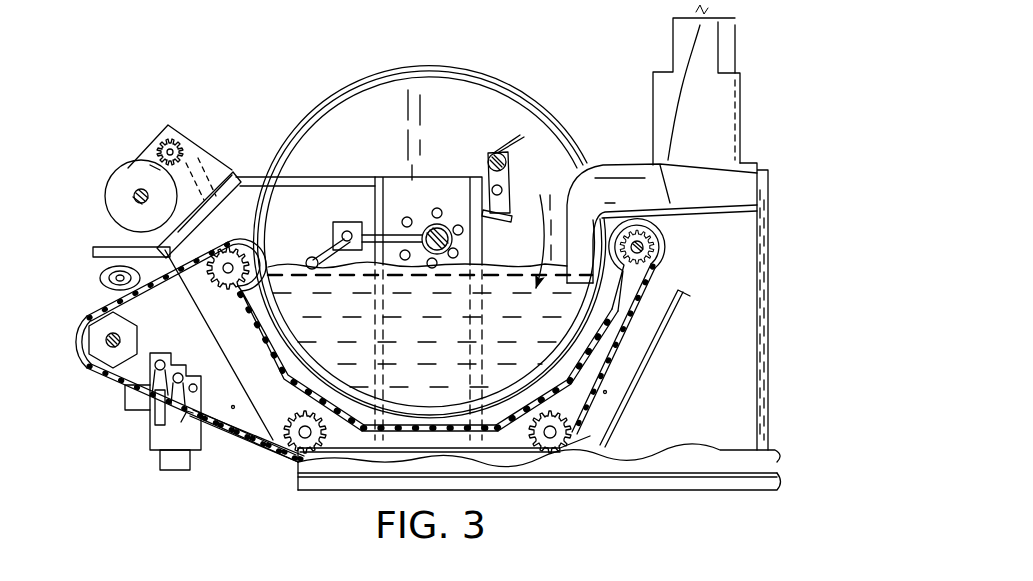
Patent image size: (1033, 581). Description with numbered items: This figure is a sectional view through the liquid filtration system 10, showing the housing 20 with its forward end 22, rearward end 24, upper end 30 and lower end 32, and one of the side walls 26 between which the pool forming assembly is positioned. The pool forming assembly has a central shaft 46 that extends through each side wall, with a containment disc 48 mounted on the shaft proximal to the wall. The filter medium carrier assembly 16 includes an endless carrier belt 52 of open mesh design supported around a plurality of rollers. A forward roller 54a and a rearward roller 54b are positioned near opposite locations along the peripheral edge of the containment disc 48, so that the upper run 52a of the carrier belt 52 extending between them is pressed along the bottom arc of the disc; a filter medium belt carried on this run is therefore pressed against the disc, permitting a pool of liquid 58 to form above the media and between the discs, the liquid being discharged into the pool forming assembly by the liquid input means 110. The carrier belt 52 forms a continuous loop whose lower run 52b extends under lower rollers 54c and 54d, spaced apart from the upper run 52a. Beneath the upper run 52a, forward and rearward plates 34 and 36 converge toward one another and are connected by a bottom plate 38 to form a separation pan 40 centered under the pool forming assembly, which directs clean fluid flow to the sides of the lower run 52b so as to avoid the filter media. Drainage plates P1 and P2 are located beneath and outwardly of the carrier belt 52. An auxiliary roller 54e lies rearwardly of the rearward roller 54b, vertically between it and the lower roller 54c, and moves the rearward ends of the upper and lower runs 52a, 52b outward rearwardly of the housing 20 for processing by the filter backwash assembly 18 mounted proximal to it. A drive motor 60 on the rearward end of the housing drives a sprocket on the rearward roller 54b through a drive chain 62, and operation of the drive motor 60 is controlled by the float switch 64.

The liquid filtration system 10 is at (868, 150).
The filter medium carrier assembly 16 is at (90, 289).
The filter backwash assembly 18 is at (150, 374).
The housing 20 is at (780, 258).
The forward end 22 is at (742, 485).
The rearward end 24 is at (253, 403).
The side wall 26 is at (652, 478).
The upper end 30 is at (350, 58).
The lower end 32 is at (800, 470).
The forward plate 34 is at (260, 333).
The rearward plate 36 is at (590, 368).
The bottom plate 38 is at (432, 437).
The separation pan 40 is at (622, 335).
The central shaft 46 is at (427, 225).
The containment disc 48 is at (382, 137).
The endless carrier belt 52 is at (187, 418).
The upper run 52a is at (518, 387).
The lower run 52b is at (400, 455).
The forward roller 54a is at (648, 250).
The rearward roller 54b is at (217, 287).
The lower roller 54c is at (277, 455).
The lower roller 54d is at (542, 440).
The auxiliary roller 54e is at (88, 343).
The pool of liquid 58 is at (442, 347).
The drive motor 60 is at (121, 180).
The drive chain 62 is at (213, 152).
The float switch 64 is at (335, 232).
The liquid input means 110 is at (730, 60).
The drainage plate P1 is at (233, 407).
The drainage plate P2 is at (605, 392).